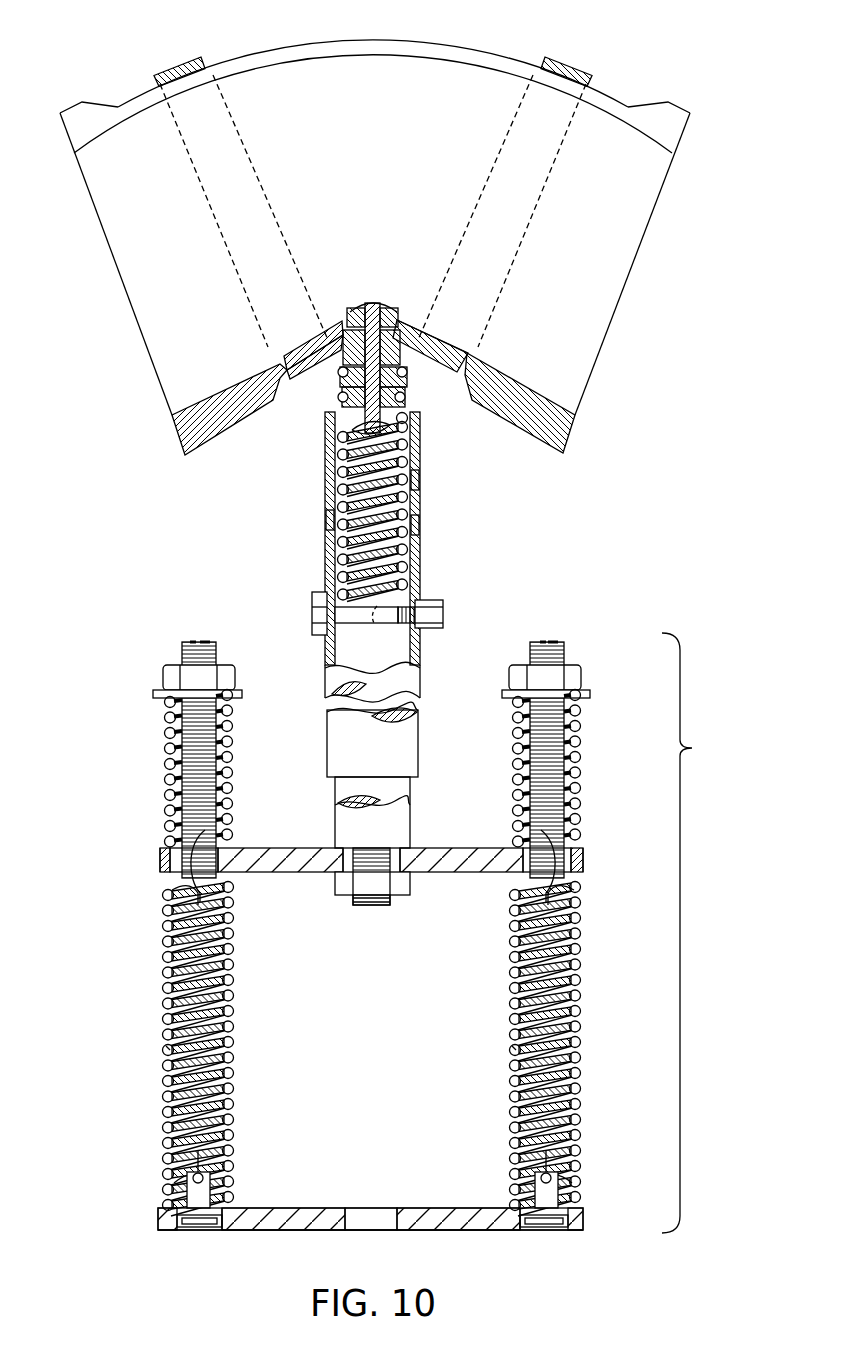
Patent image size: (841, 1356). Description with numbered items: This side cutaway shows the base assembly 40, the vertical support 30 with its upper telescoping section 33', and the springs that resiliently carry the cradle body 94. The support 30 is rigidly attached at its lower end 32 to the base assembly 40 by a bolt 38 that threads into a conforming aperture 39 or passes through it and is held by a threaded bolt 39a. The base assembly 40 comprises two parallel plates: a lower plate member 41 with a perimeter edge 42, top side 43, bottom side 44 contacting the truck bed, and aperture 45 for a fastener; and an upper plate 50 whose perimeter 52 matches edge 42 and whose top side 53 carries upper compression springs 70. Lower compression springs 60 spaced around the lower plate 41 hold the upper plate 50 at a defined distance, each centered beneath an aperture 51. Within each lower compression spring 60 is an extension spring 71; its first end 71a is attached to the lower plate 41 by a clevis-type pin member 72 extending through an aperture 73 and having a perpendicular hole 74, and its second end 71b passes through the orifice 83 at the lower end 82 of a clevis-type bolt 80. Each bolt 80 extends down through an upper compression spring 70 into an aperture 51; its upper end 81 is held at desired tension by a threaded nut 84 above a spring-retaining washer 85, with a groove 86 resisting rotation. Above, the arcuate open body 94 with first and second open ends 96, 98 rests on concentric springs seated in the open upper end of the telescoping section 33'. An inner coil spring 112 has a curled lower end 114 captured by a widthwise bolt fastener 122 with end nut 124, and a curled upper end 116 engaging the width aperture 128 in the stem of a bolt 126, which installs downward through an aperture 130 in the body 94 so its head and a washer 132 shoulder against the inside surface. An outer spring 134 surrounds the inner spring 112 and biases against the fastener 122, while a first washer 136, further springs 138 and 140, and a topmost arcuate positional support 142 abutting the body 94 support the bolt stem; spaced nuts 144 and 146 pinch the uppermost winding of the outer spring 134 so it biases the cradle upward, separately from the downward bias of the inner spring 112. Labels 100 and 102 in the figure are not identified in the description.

The support 30 is at (336, 762).
The lower end 32 is at (410, 833).
The upper telescoping section 33' is at (449, 530).
The bolt 38 is at (370, 906).
The aperture 39 is at (348, 850).
The threaded bolt 39a is at (400, 890).
The base assembly 40 is at (694, 933).
The lower plate member 41 is at (411, 1204).
The perimeter edge 42 is at (160, 1220).
The top side 43 is at (284, 1208).
The bottom side 44 is at (250, 1232).
The aperture 45 is at (368, 1212).
The upper plate 50 is at (436, 842).
The apertures 51 is at (185, 822).
The perimeter 52 is at (160, 868).
The top side 53 is at (272, 846).
The lower compression springs 60 is at (166, 1046).
The upper compression springs 70 is at (167, 724).
The extension spring 71 is at (170, 960).
The first end 71a is at (552, 1172).
The second end 71b is at (188, 908).
The clevis-type pin member 72 is at (208, 1230).
The aperture 73 is at (180, 1230).
The perpendicular hole 74 is at (190, 1183).
The clevis-type bolt 80 is at (185, 645).
The upper end 81 is at (205, 642).
The lower end 82 is at (162, 866).
The orifice 83 is at (206, 838).
The threaded nut 84 is at (226, 672).
The spring-retaining washer 85 is at (241, 698).
The groove 86 is at (193, 642).
The main cradle body 94 is at (370, 164).
The first open end 96 is at (185, 457).
The second open end 98 is at (565, 457).
The pad 100 is at (182, 62).
The pad 102 is at (572, 63).
The inner coil spring 112 is at (326, 492).
The curled lower end 114 is at (368, 627).
The curled upper end 116 is at (420, 438).
The bolt fastener 122 is at (318, 610).
The end nut 124 is at (432, 600).
The bolt 126 is at (370, 302).
The width aperture 128 is at (420, 479).
The aperture 130 is at (332, 438).
The washer 132 is at (348, 316).
The outer coil spring 134 is at (327, 520).
The first washer 136 is at (340, 382).
The further spring 138 is at (336, 360).
The further spring 140 is at (425, 338).
The arcuate shaped positional support 142 is at (402, 310).
The nut 144 is at (402, 404).
The nut 146 is at (338, 340).